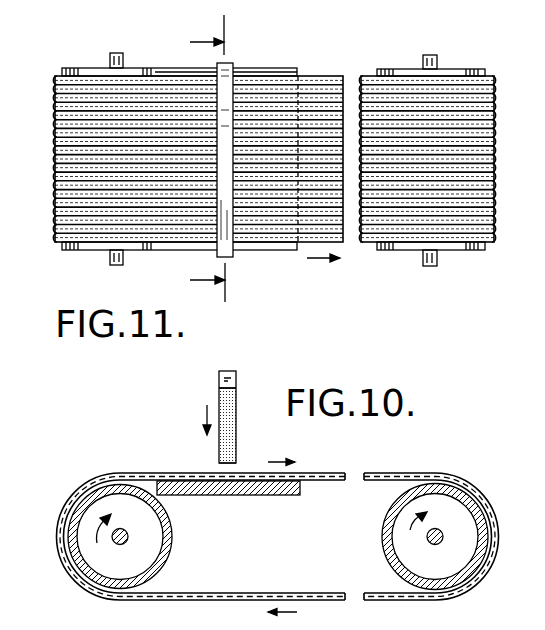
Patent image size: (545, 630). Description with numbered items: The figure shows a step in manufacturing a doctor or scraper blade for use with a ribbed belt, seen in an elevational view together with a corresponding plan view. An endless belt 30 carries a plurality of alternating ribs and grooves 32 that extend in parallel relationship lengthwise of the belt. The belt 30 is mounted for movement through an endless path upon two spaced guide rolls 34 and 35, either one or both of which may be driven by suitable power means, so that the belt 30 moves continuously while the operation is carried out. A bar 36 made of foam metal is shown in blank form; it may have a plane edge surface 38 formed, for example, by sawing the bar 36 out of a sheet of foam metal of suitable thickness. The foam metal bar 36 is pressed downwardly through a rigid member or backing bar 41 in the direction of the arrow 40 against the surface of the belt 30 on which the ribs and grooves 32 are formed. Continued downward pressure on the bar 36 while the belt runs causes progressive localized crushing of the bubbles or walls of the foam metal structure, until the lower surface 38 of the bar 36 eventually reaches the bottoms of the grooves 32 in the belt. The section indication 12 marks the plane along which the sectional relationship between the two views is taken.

In FIG. 11, the section line 12- 12 is at (265, 158).
In FIG. 11, the endless belt 30 is at (320, 76).
In FIG. 10, the endless belt 30 is at (237, 592).
In FIG. 11, the ribs and grooves 32 is at (65, 172).
In FIG. 10, the ribs and grooves 32 is at (326, 481).
In FIG. 11, the guide roll 34 is at (88, 68).
In FIG. 10, the guide roll 34 is at (90, 516).
In FIG. 11, the guide roll 35 is at (402, 69).
In FIG. 10, the guide roll 35 is at (452, 518).
In FIG. 10, the bar 36 is at (219, 398).
In FIG. 10, the plane edge surface 38 is at (222, 465).
In FIG. 10, the arrow 40 is at (205, 422).
In FIG. 11, the backing bar 41 is at (228, 106).
In FIG. 10, the backing bar 41 is at (231, 375).